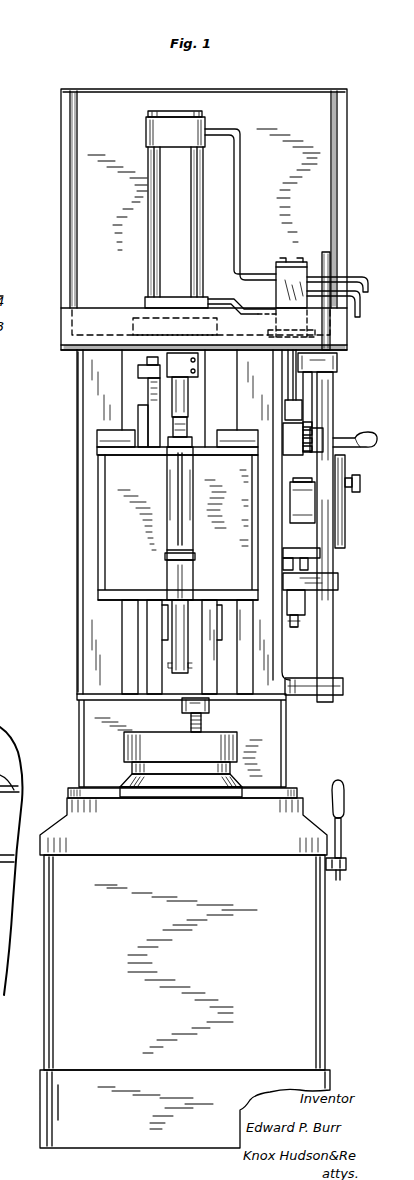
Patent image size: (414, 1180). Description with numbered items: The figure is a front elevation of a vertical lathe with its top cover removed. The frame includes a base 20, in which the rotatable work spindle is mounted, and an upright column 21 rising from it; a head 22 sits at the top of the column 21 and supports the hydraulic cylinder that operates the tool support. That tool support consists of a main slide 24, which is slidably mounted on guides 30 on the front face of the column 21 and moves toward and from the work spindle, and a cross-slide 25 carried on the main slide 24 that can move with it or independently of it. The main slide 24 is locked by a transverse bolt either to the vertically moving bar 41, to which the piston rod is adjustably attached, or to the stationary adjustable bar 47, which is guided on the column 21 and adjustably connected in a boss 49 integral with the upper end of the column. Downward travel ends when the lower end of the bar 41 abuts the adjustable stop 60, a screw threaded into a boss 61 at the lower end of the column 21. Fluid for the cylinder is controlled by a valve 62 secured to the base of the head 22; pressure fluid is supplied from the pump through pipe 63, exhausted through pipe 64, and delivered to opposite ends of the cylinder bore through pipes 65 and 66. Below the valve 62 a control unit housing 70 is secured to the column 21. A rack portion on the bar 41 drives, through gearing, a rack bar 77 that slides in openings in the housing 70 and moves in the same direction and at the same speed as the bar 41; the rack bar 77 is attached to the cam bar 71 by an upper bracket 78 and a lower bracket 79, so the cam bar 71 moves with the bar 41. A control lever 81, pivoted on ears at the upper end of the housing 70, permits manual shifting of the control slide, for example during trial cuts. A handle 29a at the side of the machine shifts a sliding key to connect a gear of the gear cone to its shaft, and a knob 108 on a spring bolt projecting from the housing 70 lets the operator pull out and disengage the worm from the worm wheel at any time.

The base 20 is at (55, 1030).
The column 21 is at (77, 518).
The head 22 is at (340, 215).
The main slide 24 is at (97, 438).
The cross-slide 25 is at (105, 573).
The handle 29a is at (343, 786).
The guides 30 is at (173, 521).
The bar 41 is at (193, 402).
The adjustable bar 47 is at (150, 628).
The boss 49 is at (147, 368).
The adjustable stop 60 is at (201, 724).
The boss 61 is at (182, 706).
The valve 62 is at (290, 262).
The pipe 63 is at (360, 310).
The pipe 64 is at (368, 288).
The pipe 65 is at (222, 299).
The pipe 66 is at (234, 208).
The housing 70 is at (333, 532).
The cam bar 71 is at (330, 420).
The rack bar 77 is at (312, 400).
The bracket 78 is at (337, 364).
The bracket 79 is at (338, 583).
The control lever 81 is at (365, 434).
The knob 108 is at (360, 487).